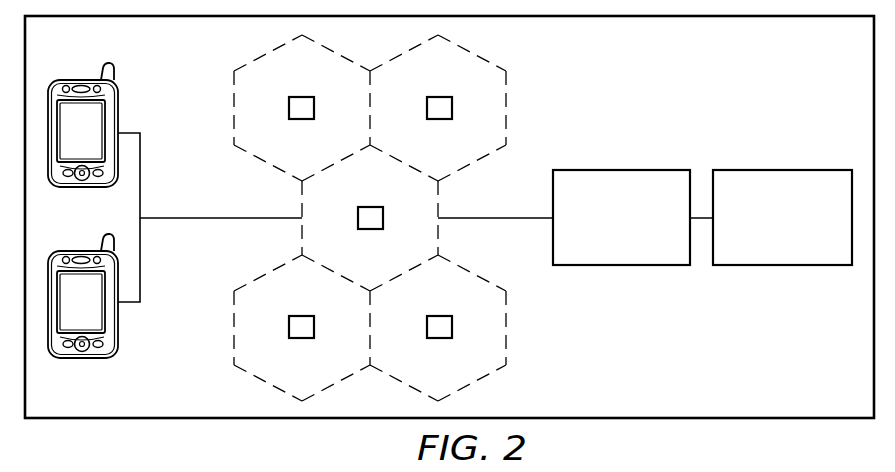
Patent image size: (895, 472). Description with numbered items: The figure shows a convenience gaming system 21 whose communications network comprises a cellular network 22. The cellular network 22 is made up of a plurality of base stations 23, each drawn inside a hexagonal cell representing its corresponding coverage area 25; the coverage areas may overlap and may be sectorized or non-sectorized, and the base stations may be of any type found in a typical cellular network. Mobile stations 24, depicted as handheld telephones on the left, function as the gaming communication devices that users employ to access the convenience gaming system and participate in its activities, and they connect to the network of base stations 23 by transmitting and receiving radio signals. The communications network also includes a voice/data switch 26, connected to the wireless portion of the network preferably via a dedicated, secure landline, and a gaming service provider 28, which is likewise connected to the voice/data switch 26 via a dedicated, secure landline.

The gaming system 21 is at (689, 103).
The cellular network 22 is at (370, 219).
The base station 23 is at (301, 97).
The mobile station 24 is at (82, 80).
The coverage area 25 is at (232, 97).
The voice/data switch 26 is at (620, 266).
The gaming service provider 28 is at (780, 266).